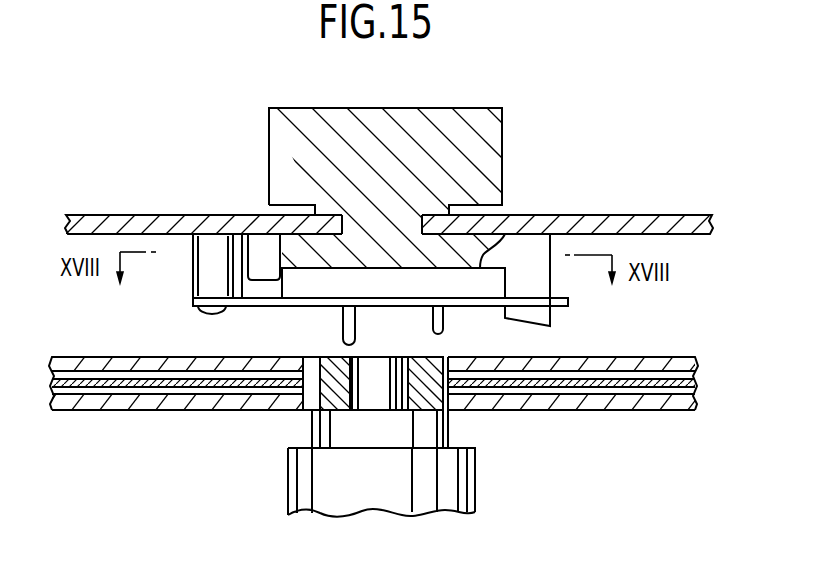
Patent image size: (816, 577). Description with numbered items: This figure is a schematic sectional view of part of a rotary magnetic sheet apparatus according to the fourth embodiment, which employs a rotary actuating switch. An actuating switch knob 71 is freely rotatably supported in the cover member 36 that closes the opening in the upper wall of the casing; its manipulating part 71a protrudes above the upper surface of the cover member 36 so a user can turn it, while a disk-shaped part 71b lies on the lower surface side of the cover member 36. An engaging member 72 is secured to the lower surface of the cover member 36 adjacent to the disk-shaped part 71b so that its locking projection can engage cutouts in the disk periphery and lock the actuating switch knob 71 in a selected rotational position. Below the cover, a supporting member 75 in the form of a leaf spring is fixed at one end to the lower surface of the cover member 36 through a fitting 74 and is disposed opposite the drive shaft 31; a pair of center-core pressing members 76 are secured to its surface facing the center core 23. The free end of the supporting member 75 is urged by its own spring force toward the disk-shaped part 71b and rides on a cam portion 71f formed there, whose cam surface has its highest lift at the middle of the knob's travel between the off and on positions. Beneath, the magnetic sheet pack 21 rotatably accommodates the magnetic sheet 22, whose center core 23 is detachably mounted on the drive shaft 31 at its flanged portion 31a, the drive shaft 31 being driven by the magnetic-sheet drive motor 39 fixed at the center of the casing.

The actuating switch knob 71 is at (486, 110).
The manipulating part 71a is at (415, 118).
The disk-shaped part 71b is at (331, 261).
The cam portion 71f is at (541, 276).
The engaging member 72 is at (258, 250).
The cover member 36 is at (635, 228).
The fitting 74 is at (202, 268).
The supporting member 75 is at (287, 300).
The center-core pressing members 76 is at (353, 328).
The magnetic sheet pack 21 is at (657, 352).
The magnetic sheet 22 is at (583, 391).
The center core 23 is at (440, 392).
The drive shaft 31 is at (363, 389).
The flanged portion 31a is at (325, 437).
The magnetic-sheet drive motor 39 is at (305, 508).